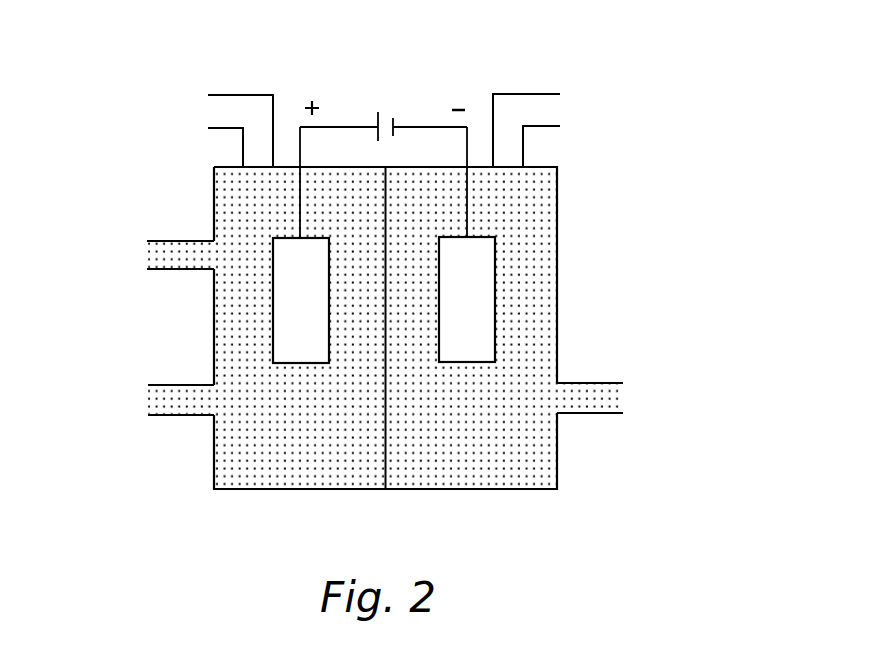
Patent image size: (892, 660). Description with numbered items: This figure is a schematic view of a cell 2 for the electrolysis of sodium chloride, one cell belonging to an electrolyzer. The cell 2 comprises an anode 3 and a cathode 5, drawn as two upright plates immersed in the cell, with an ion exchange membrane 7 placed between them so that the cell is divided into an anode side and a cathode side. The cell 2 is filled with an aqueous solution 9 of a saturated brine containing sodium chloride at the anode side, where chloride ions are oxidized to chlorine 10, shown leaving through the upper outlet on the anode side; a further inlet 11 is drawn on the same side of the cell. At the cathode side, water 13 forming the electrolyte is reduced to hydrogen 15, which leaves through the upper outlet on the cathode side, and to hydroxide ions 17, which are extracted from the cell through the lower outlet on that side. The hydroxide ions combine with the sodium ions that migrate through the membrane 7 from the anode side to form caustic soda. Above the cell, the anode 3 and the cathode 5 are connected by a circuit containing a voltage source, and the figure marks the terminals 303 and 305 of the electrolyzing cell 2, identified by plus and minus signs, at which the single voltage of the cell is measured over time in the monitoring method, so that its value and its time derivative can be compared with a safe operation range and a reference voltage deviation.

The cell 2 is at (640, 73).
The anode 3 is at (295, 267).
The cathode 5 is at (473, 267).
The ion exchange membrane 7 is at (390, 489).
The aqueous solution 9 is at (157, 400).
The chlorine 10 is at (242, 112).
The inlet 11 is at (155, 257).
The water 13 is at (530, 327).
The hydrogen 15 is at (523, 110).
The hydroxide ions 17 is at (612, 400).
The terminal 303 is at (309, 101).
The terminal 305 is at (457, 103).